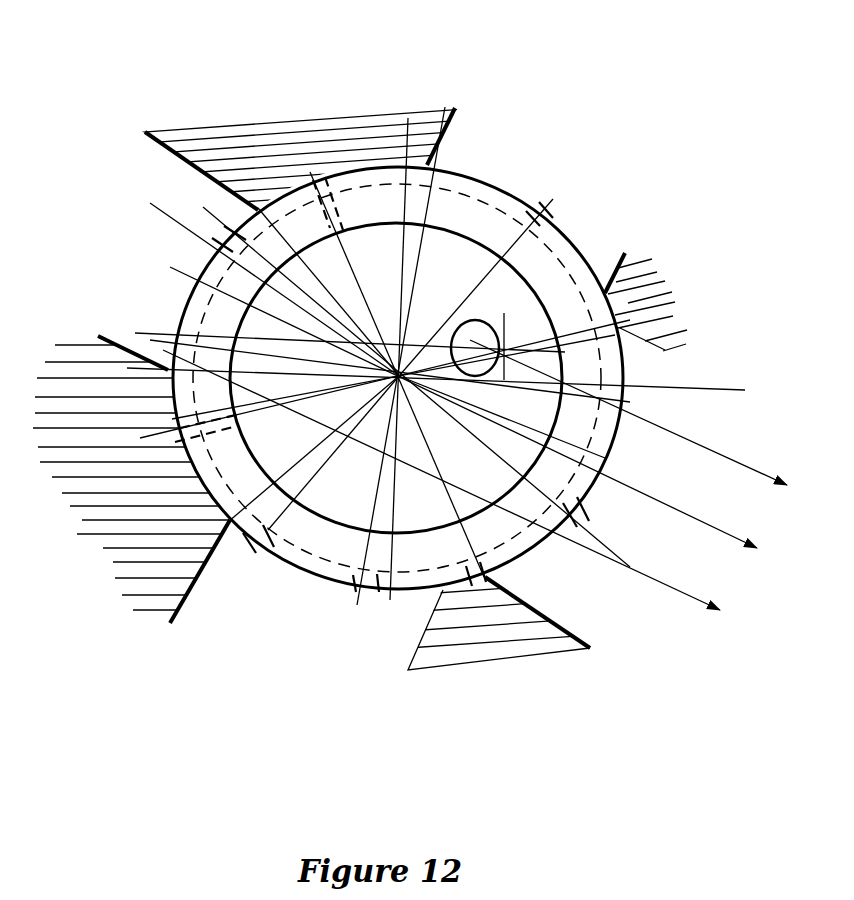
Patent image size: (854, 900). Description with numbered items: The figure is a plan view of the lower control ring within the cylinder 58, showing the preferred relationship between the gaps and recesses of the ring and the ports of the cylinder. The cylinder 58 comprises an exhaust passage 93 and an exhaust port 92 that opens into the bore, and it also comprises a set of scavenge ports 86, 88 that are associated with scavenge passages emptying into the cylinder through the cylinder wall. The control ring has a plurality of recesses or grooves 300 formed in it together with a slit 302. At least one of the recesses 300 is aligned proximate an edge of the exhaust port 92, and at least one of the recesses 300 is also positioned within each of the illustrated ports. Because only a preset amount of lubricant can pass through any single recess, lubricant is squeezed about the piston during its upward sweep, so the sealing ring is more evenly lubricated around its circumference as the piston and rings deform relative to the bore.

The cylinder 58 is at (257, 128).
The scavenge port 86 is at (361, 378).
The scavenge port 88 is at (417, 413).
The exhaust port 92 is at (625, 367).
The exhaust passage 93 is at (475, 438).
The recesses 300 is at (443, 160).
The slit 302 is at (252, 440).